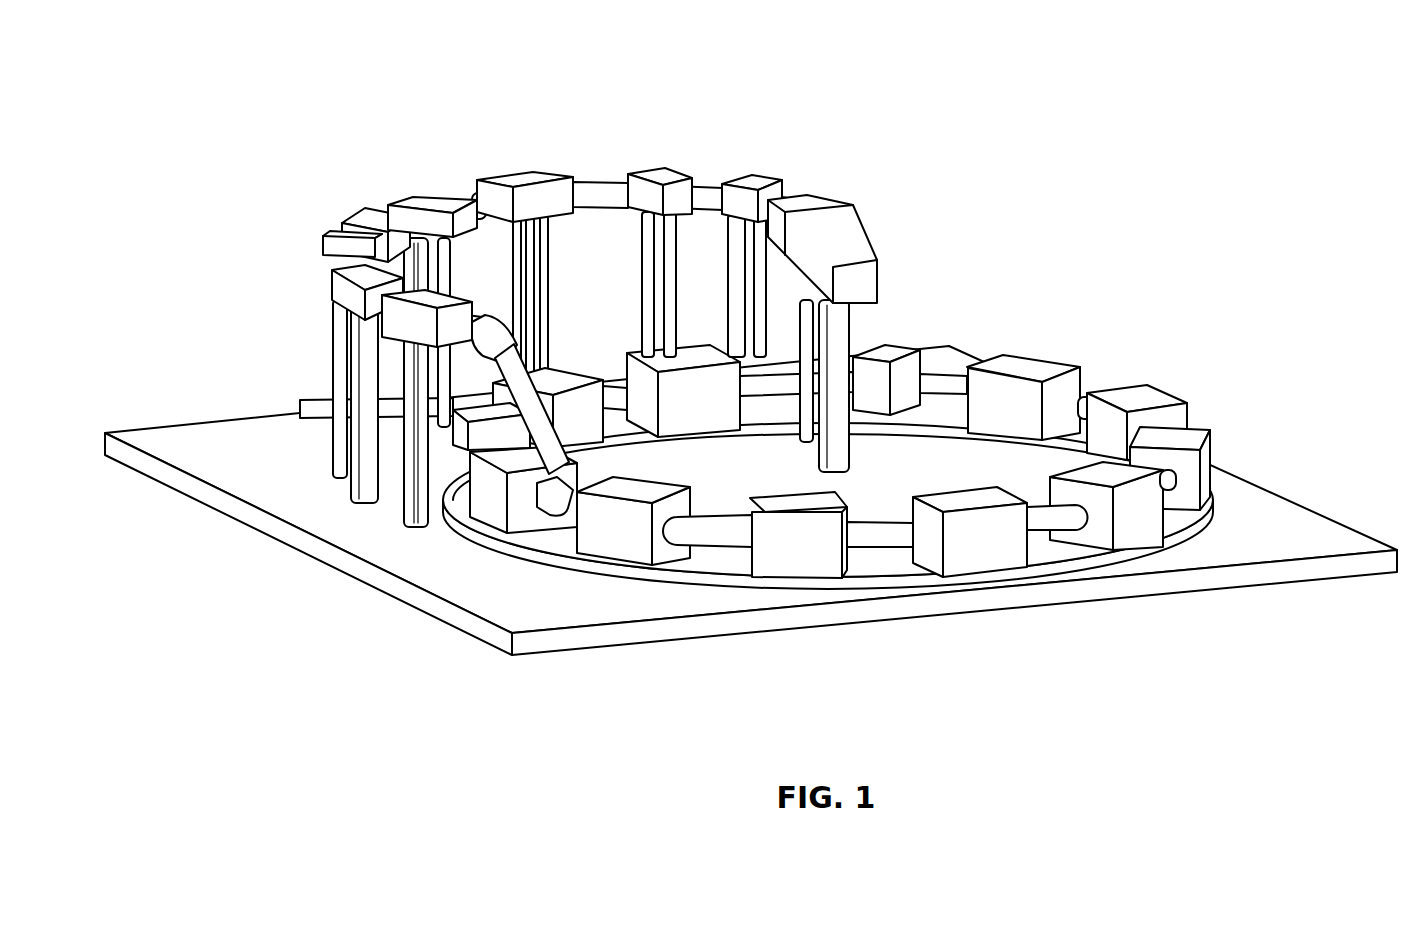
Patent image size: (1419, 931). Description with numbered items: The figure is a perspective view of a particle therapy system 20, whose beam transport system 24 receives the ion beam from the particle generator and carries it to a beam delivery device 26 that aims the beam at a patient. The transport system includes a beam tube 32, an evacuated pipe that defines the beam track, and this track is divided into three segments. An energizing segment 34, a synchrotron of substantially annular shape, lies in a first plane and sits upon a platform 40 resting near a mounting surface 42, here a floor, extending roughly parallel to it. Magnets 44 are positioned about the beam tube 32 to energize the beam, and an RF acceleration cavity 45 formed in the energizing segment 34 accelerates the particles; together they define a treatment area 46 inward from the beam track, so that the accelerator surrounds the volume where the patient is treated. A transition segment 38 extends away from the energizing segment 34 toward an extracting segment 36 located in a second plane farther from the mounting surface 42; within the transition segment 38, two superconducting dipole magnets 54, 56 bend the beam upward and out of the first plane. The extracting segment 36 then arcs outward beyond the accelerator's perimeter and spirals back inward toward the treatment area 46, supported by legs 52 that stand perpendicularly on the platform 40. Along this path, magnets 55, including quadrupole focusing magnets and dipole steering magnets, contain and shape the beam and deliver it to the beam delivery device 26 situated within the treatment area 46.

The particle therapy system 20 is at (1010, 95).
The beam transport system 24 is at (789, 445).
The beam delivery device 26 is at (857, 233).
The beam tube 32 is at (957, 373).
The energizing segment 34 is at (733, 537).
The extracting segment 36 is at (600, 188).
The transition segment 38 is at (408, 523).
The platform 40 is at (1210, 458).
The mounting surface 42 is at (210, 433).
The magnets 44 is at (764, 445).
The RF acceleration cavity 45 is at (1160, 397).
The treatment area 46 is at (913, 445).
The legs 52 is at (540, 267).
The superconducting dipole magnet 54 is at (552, 513).
The magnets 55 is at (357, 210).
The superconducting dipole magnet 56 is at (500, 317).